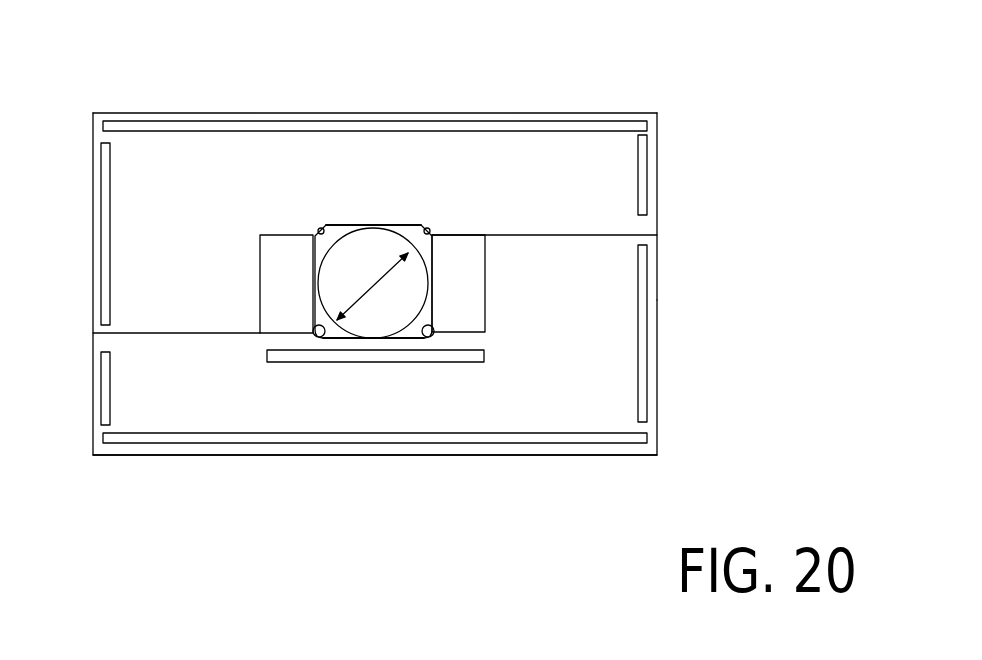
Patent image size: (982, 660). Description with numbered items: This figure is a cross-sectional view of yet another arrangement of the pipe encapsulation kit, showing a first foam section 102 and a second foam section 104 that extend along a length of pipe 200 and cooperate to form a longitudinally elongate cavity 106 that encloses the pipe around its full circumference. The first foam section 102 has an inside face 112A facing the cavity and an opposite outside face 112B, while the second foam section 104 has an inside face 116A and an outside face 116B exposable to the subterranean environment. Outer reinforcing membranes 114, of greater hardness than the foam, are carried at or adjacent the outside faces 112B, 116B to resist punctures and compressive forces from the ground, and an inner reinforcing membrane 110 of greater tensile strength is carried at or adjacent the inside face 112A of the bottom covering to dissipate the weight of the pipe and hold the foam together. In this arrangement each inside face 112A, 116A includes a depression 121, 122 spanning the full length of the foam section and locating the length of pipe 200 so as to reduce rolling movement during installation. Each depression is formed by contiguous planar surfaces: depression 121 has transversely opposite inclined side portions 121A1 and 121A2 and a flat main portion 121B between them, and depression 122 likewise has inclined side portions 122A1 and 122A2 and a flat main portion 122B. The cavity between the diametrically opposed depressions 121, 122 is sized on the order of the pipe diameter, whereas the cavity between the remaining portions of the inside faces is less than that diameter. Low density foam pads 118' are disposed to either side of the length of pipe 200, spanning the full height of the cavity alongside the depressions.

The first foam section 102 is at (654, 423).
The second foam section 104 is at (650, 124).
The cavity 106 is at (335, 226).
The inner reinforcing membrane 110 is at (467, 363).
The inside face 112A is at (288, 332).
The outside face 112B is at (333, 456).
The outer reinforcing membrane 114 is at (190, 128).
The inside face 116A is at (467, 236).
The outside face 116B is at (280, 118).
The low density foam pad 118' is at (497, 283).
The depression 121 is at (400, 342).
The side portion 121A1 is at (313, 327).
The side portion 121A2 is at (432, 333).
The flat main portion 121B is at (335, 338).
The depression 122 is at (381, 225).
The side portion 122A1 is at (318, 230).
The side portion 122A2 is at (432, 232).
The flat main portion 122B is at (357, 225).
The length of pipe 200 is at (410, 226).